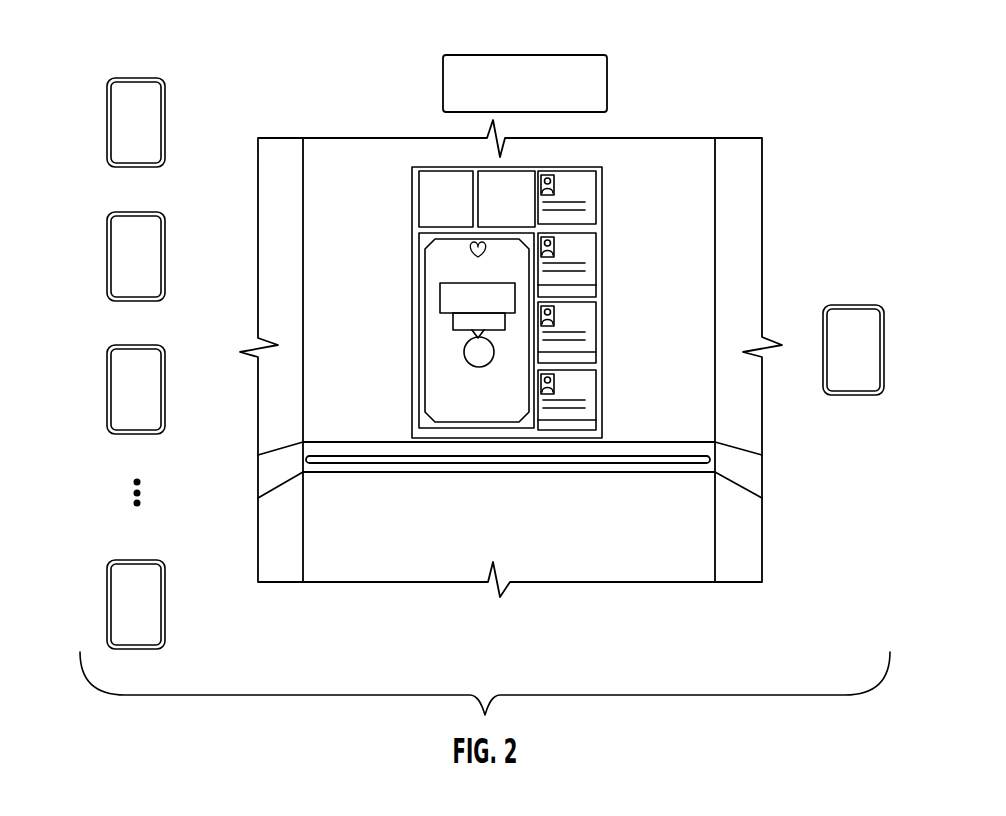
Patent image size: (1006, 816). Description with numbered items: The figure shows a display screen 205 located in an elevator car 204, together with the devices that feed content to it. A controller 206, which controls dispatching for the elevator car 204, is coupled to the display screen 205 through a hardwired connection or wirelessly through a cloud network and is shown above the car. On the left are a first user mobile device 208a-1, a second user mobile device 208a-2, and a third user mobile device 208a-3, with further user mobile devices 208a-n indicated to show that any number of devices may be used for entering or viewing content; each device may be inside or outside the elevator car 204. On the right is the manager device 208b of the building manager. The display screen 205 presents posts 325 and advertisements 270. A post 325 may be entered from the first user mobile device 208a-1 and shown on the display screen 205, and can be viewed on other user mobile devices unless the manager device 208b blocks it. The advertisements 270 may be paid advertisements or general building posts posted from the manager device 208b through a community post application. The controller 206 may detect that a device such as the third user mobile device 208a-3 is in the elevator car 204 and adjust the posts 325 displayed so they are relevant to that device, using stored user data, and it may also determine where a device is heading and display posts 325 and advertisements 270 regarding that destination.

The elevator car 204 is at (785, 161).
The display screen 205 is at (603, 242).
The controller 206 is at (443, 80).
The first user mobile device 208a-1 is at (167, 113).
The second user mobile device 208a-2 is at (167, 252).
The third user mobile device 208a-3 is at (167, 394).
The user mobile devices 208a-n is at (167, 607).
The manager device 208b is at (885, 352).
The advertisements 270 is at (472, 451).
The posts 325 is at (565, 446).